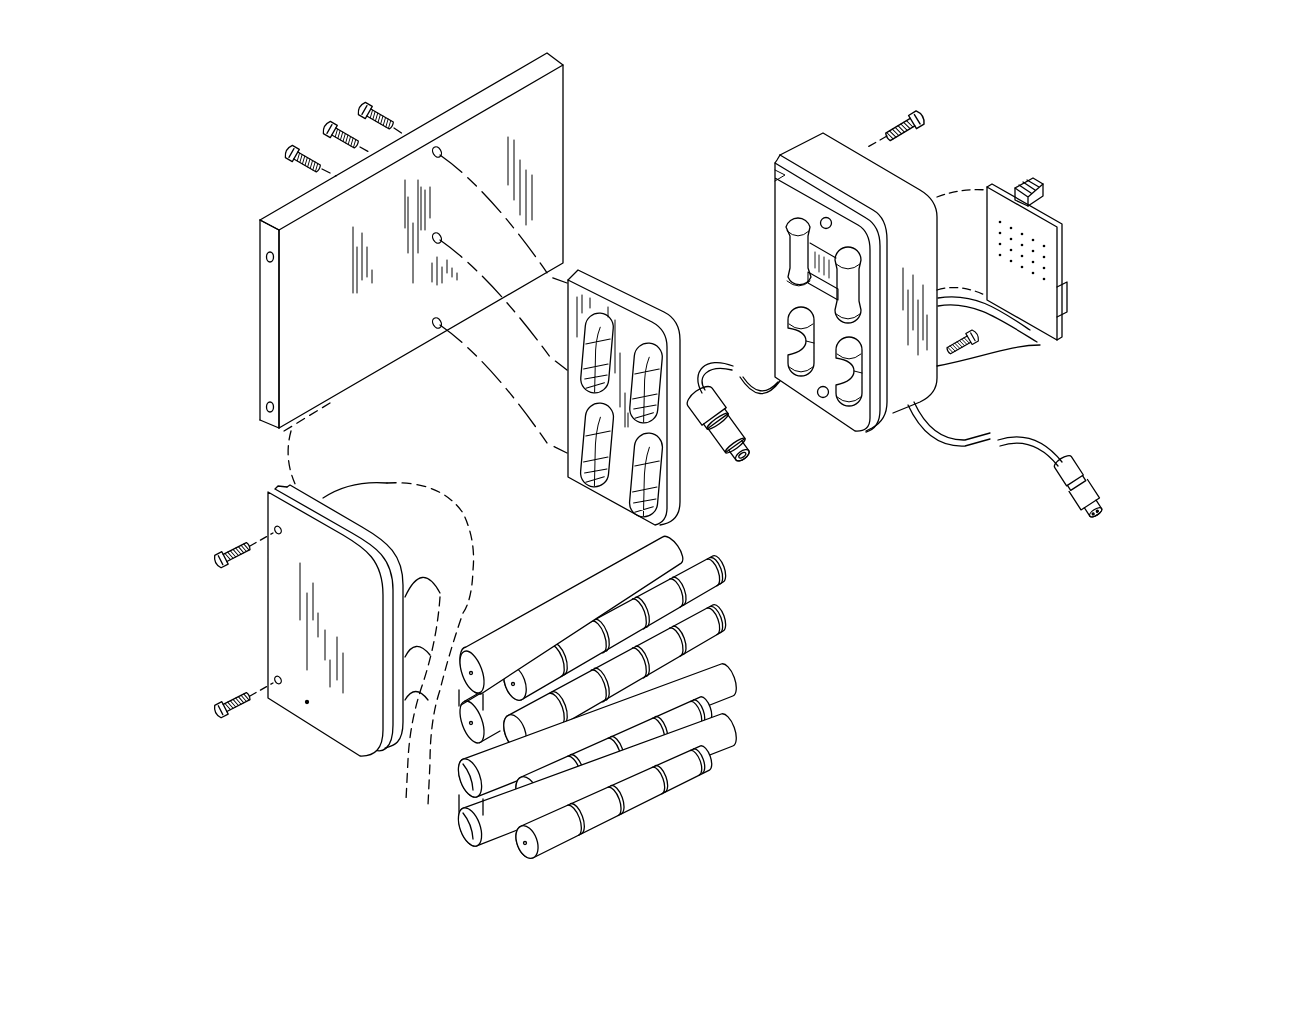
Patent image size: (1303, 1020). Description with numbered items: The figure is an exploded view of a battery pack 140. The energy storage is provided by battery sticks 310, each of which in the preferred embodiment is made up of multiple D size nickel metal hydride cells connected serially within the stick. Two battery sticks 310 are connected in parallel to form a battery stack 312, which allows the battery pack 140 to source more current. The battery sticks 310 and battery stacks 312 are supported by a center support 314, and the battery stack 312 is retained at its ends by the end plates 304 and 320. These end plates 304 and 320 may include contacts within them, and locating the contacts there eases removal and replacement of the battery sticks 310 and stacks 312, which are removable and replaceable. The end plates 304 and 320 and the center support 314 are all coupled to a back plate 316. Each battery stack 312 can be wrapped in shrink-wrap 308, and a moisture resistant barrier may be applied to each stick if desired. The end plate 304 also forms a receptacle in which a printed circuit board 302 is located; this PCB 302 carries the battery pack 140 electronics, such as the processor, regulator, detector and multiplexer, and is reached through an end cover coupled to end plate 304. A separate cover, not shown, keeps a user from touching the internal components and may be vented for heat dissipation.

The battery pack 140 is at (1170, 154).
The printed circuit board 302 is at (1055, 220).
The end plate 304 is at (812, 148).
The shrink-wrap 308 is at (488, 830).
The battery stick 310 is at (735, 758).
The battery stack 312 is at (443, 828).
The center support 314 is at (608, 296).
The back plate 316 is at (452, 106).
The end plate 320 is at (273, 508).